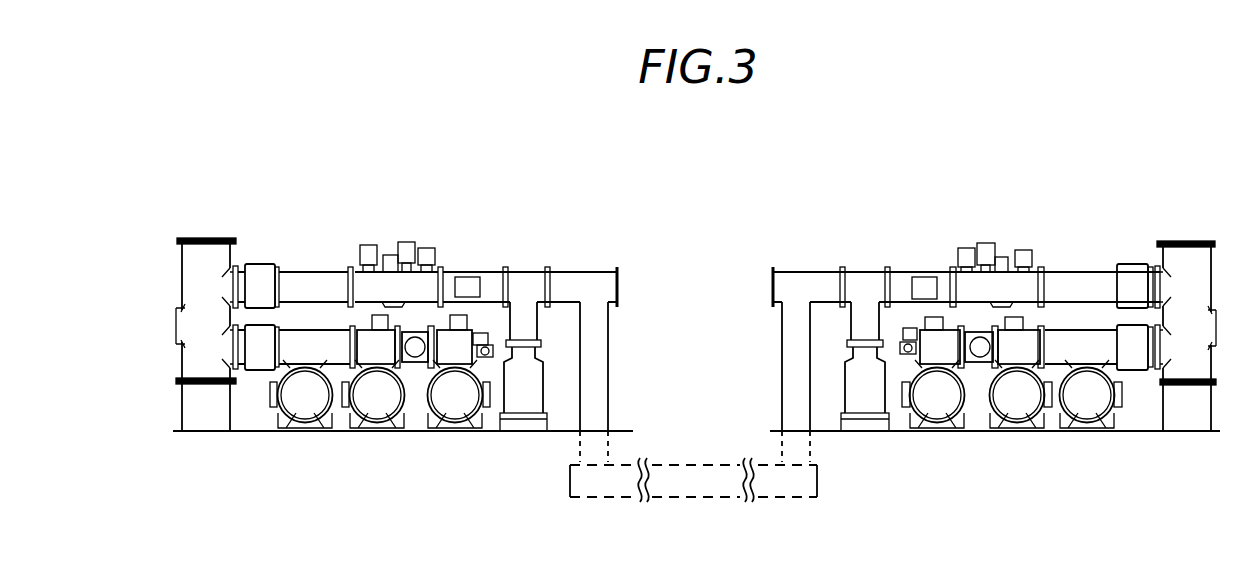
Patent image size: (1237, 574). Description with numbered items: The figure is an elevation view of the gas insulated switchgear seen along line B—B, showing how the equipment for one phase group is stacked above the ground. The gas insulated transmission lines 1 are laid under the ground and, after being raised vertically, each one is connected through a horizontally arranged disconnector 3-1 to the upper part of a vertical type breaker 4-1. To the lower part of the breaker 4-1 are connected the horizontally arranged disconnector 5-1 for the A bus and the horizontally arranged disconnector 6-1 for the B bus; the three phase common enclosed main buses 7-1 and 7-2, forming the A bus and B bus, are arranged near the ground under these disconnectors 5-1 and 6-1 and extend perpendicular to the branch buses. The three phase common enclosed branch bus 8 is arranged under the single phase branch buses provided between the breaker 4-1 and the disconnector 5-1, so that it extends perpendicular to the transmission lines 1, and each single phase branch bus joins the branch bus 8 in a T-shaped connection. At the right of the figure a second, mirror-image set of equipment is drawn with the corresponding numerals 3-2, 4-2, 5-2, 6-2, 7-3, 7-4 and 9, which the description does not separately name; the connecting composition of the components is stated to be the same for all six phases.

The gas insulated transmission lines 1 is at (702, 485).
The disconnectors at the transmission line side 3-1 is at (390, 282).
The second control valve unit 3-2 is at (1000, 285).
The vertical type breakers 4-1 is at (205, 262).
The second riser pipe 4-2 is at (1188, 265).
The disconnectors for the A bus 5-1 is at (378, 355).
The second shut-off valve 5-2 is at (928, 366).
The disconnectors for the B bus 6-1 is at (458, 357).
The second regulating valve 6-2 is at (1013, 358).
The three phase common enclosed main bus 7-1 is at (382, 412).
The three phase common enclosed main bus 7-2 is at (456, 412).
The third pump 7-3 is at (955, 412).
The fourth pump 7-4 is at (1010, 412).
The three phase common enclosed branch bus 8 is at (303, 413).
The second auxiliary pump 9 is at (1092, 412).